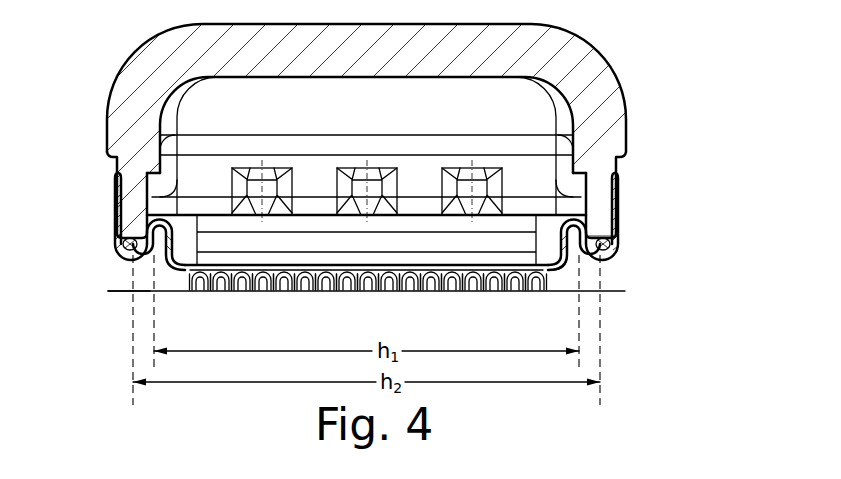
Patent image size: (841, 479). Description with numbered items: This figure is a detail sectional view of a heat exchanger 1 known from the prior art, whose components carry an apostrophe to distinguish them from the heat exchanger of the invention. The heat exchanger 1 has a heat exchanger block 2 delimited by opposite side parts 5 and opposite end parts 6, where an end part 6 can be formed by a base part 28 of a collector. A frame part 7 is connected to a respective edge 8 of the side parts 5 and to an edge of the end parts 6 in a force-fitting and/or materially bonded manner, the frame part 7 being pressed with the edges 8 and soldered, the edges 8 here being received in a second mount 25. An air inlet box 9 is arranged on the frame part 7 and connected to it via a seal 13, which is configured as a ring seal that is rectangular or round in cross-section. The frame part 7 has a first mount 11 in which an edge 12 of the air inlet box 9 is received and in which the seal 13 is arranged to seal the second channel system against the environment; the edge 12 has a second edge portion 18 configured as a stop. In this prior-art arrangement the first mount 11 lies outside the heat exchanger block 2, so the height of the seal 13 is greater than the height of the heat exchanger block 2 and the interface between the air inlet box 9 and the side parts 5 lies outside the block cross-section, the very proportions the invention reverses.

The heat exchanger 1 is at (112, 52).
The heat exchanger block 2 is at (452, 331).
The side part 5 is at (567, 288).
The end part 6 is at (368, 310).
The frame part 7 is at (600, 260).
The edge 8 is at (573, 278).
The air inlet box 9 is at (590, 82).
The first mount 11 is at (113, 236).
The edge 12 is at (602, 210).
The seal 13 is at (123, 258).
The second edge portion 18 is at (604, 229).
The second mount 25 is at (115, 291).
The base part 28 is at (285, 292).